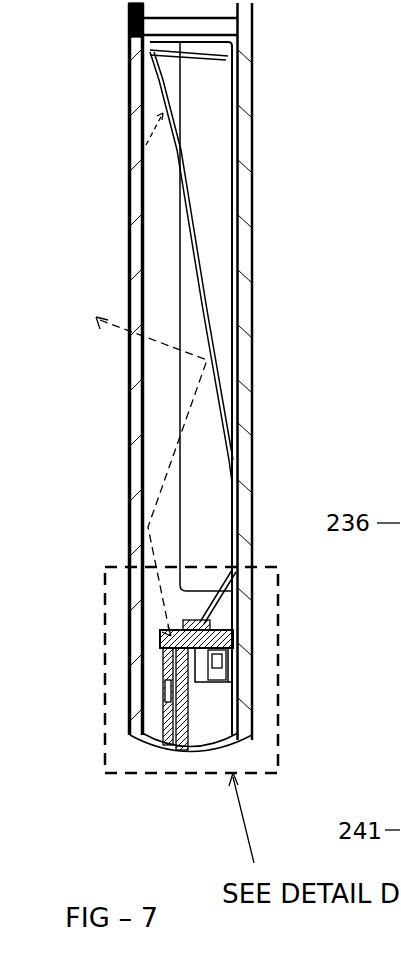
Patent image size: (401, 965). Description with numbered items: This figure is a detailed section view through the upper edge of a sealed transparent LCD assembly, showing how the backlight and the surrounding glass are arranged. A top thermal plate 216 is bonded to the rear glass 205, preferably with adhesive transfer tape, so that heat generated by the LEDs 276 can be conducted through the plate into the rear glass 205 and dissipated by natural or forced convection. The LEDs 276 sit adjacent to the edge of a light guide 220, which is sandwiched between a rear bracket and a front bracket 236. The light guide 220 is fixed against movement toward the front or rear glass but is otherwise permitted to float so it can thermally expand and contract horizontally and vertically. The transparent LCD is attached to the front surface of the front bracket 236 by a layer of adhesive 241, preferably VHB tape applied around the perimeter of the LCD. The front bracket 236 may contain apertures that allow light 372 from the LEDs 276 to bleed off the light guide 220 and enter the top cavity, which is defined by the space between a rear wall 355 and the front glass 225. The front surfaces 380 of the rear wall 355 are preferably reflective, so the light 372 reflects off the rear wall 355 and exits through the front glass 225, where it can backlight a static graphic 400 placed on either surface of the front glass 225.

The static graphic 400 is at (130, 145).
The rear wall 355 is at (211, 220).
The top thermal plate 216 is at (237, 262).
The rear glass 205 is at (240, 305).
The front surfaces of the rear wall 380 is at (164, 100).
The light 372 is at (167, 473).
The front bracket 236 is at (165, 640).
The LEDs 276 is at (232, 628).
The adhesive 241 is at (165, 675).
The front glass 225 is at (130, 718).
The light guide 220 is at (185, 745).